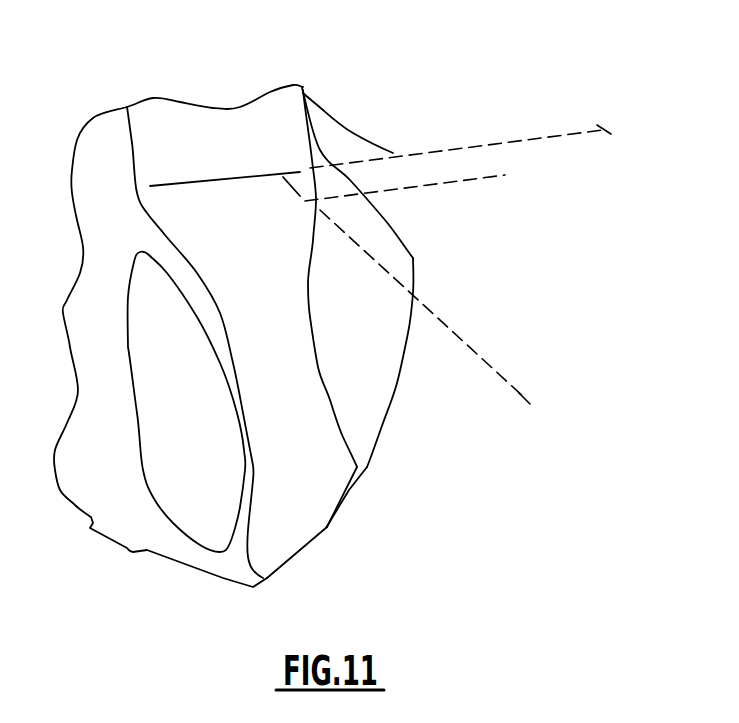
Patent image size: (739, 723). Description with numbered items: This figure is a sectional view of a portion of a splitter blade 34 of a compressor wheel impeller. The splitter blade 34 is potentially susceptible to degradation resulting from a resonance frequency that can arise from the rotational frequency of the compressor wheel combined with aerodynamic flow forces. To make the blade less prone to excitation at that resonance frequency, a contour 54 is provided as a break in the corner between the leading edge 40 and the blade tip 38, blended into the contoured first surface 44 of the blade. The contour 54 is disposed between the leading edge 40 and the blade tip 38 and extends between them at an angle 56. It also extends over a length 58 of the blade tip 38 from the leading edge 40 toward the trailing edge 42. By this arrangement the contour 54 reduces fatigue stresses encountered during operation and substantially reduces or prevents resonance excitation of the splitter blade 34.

The splitter blade 34 is at (538, 76).
The blade tip 38 is at (320, 372).
The leading edge 40 is at (208, 181).
The trailing edge 42 is at (352, 491).
The first surface 44 is at (277, 363).
The contour 54 is at (307, 194).
The angle 56 is at (603, 132).
The length 58 is at (460, 181).